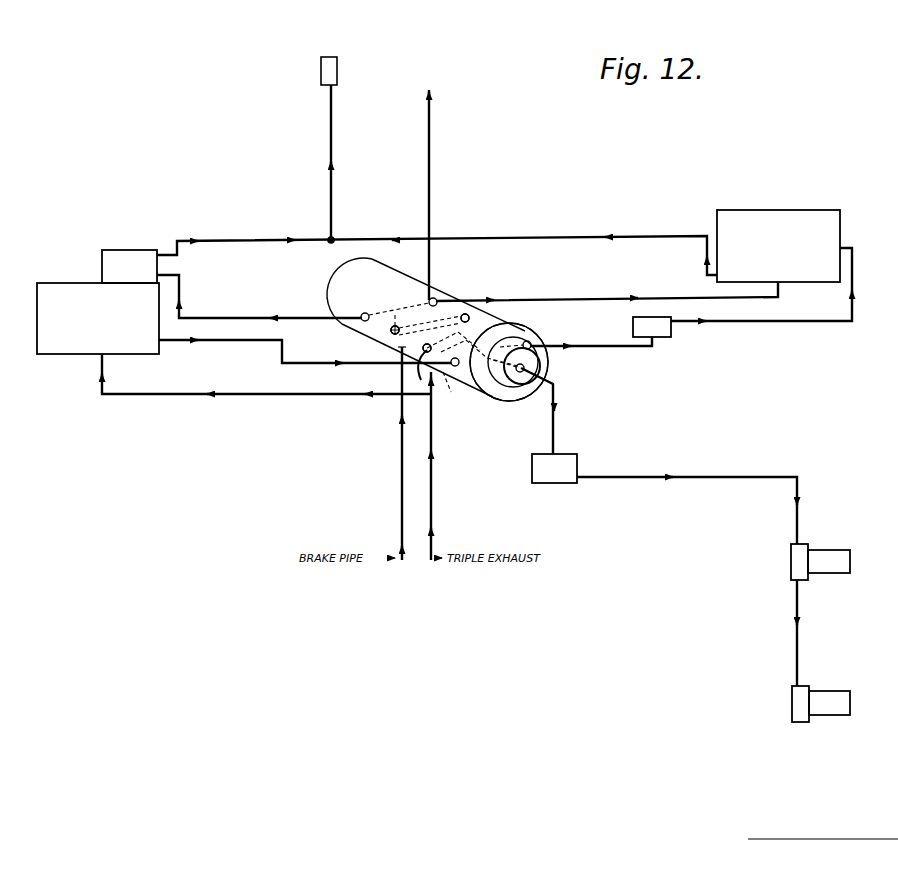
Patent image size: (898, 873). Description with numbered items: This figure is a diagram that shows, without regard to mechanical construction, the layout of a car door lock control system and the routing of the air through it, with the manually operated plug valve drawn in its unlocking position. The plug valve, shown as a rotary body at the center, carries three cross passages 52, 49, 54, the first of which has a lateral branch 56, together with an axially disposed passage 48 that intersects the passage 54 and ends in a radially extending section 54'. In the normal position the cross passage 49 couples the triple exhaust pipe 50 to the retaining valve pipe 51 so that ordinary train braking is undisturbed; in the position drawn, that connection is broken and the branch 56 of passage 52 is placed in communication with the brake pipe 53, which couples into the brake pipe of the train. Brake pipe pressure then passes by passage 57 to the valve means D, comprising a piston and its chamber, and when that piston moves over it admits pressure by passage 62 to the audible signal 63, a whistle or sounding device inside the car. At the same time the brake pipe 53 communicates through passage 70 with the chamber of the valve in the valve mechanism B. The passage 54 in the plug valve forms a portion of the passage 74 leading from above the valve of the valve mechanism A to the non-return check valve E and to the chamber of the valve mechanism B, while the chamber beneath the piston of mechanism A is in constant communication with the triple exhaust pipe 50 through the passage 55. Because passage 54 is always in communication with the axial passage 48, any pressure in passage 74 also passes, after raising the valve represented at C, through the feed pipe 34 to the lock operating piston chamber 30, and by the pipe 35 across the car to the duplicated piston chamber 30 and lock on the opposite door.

The valve mechanism A is at (98, 318).
The valve mechanism B is at (778, 246).
The valve C is at (554, 468).
The valve means D is at (129, 266).
The non-return check valve E is at (652, 327).
The piston chamber 30 is at (830, 698).
The feed pipe 34 is at (558, 433).
The pipe 35 is at (802, 653).
The axially disposed passage 48 is at (525, 367).
The cross passage 49 is at (469, 318).
The triple exhaust pipe 50 is at (436, 506).
The retaining valve pipe 51 is at (431, 175).
The cross passage 52 is at (384, 312).
The brake pipe 53 is at (400, 492).
The cross passage 54 is at (509, 375).
The radially extending section 54' is at (447, 377).
The passage 55 is at (255, 400).
The lateral branch 56 is at (392, 334).
The passage 57 is at (256, 309).
The passage 62 is at (486, 237).
The audible signal 63 is at (333, 68).
The passage 70 is at (600, 298).
The passage 74 is at (330, 361).